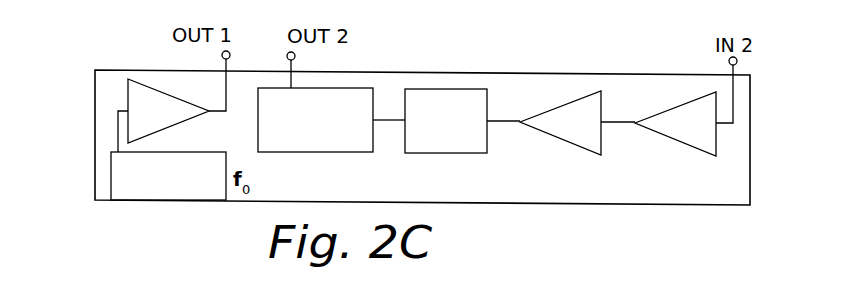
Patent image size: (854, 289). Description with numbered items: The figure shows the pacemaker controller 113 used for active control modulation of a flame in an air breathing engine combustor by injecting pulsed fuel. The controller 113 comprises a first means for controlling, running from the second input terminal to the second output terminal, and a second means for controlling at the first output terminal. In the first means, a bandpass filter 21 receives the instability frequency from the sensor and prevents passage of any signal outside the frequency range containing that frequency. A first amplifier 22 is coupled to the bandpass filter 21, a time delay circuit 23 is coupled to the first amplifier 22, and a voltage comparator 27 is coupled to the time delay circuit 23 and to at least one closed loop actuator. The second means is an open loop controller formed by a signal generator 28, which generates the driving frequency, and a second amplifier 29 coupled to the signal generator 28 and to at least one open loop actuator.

The controller 113 is at (755, 210).
The second amplifier 29 is at (145, 100).
The signal generator 28 is at (127, 193).
The voltage comparator 27 is at (323, 97).
The time delay circuit 23 is at (470, 103).
The first amplifier 22 is at (584, 107).
The bandpass filter 21 is at (702, 105).